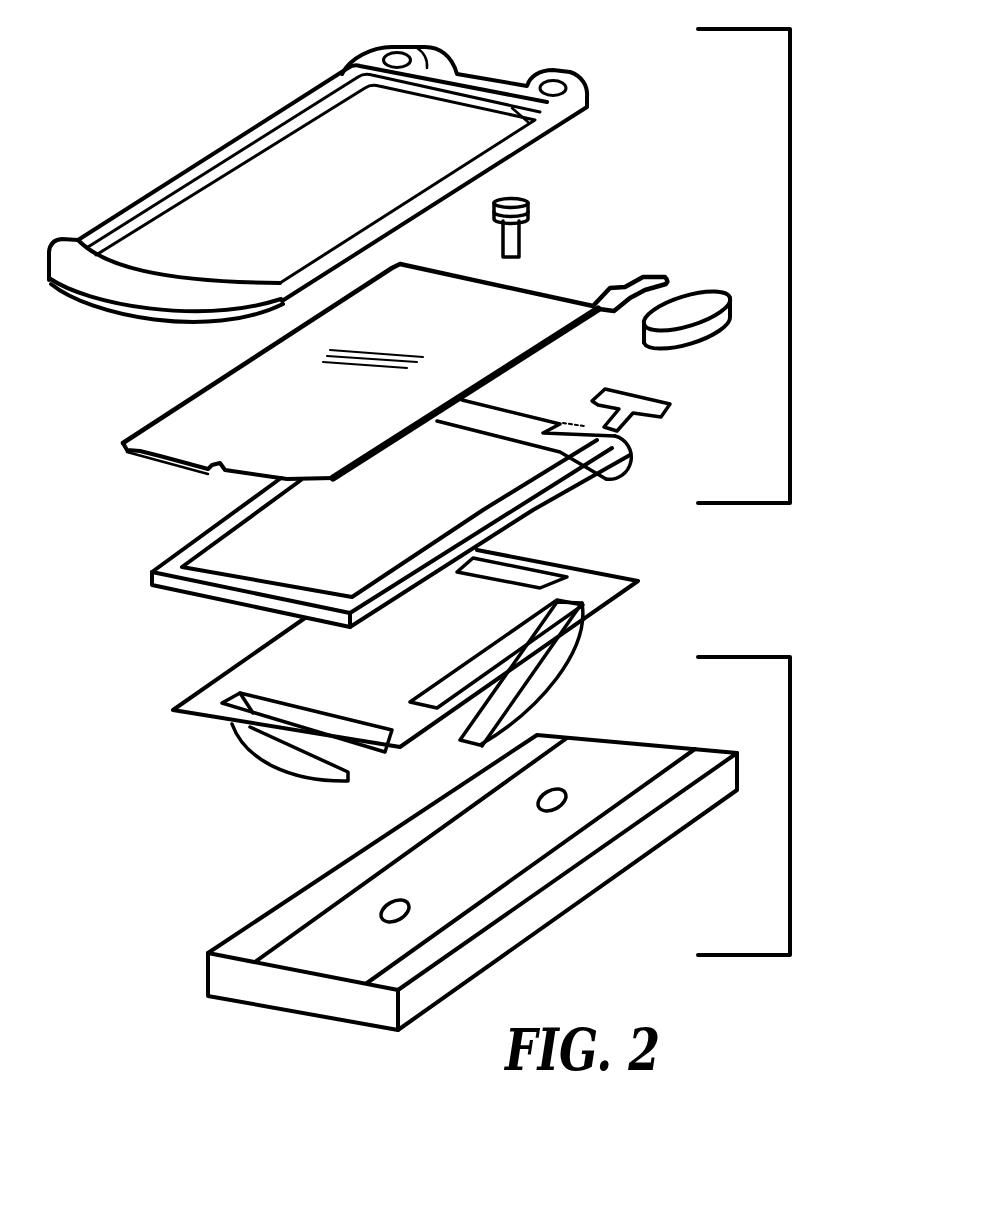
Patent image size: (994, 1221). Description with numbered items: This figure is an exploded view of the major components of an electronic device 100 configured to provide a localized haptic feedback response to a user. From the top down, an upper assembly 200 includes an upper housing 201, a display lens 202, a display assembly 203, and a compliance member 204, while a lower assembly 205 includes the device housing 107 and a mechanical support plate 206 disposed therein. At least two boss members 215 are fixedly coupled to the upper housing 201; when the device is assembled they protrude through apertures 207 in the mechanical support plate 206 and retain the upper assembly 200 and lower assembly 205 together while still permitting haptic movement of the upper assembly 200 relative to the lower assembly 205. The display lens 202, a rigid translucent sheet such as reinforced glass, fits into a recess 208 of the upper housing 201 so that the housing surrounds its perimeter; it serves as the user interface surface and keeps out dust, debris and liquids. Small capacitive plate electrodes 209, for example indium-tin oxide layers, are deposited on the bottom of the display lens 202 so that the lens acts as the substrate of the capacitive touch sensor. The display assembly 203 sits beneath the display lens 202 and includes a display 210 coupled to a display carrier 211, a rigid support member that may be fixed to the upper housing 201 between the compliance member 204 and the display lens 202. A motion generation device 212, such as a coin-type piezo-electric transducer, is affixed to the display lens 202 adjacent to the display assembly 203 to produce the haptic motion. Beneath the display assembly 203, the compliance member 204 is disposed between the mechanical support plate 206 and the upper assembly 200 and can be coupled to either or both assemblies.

The electronic device 100 is at (150, 124).
The device housing 107 is at (617, 857).
The upper assembly 200 is at (814, 239).
The upper housing 201 is at (75, 267).
The display lens 202 is at (200, 428).
The display assembly 203 is at (126, 585).
The compliance member 204 is at (333, 687).
The lower assembly 205 is at (814, 806).
The mechanical support plate 206 is at (317, 950).
The apertures 207 is at (395, 912).
The recess 208 is at (320, 88).
The capacitive plate electrodes 209 is at (370, 367).
The display 210 is at (267, 557).
The display carrier 211 is at (205, 593).
The motion generation device 212 is at (684, 310).
The boss members 215 is at (530, 213).